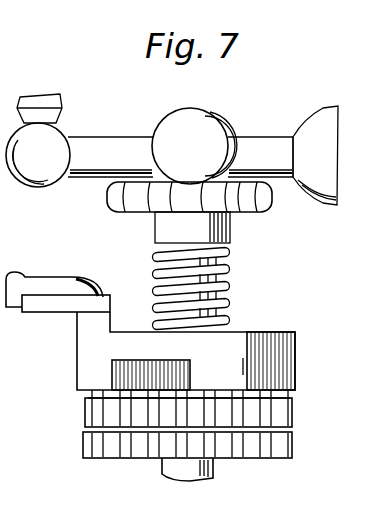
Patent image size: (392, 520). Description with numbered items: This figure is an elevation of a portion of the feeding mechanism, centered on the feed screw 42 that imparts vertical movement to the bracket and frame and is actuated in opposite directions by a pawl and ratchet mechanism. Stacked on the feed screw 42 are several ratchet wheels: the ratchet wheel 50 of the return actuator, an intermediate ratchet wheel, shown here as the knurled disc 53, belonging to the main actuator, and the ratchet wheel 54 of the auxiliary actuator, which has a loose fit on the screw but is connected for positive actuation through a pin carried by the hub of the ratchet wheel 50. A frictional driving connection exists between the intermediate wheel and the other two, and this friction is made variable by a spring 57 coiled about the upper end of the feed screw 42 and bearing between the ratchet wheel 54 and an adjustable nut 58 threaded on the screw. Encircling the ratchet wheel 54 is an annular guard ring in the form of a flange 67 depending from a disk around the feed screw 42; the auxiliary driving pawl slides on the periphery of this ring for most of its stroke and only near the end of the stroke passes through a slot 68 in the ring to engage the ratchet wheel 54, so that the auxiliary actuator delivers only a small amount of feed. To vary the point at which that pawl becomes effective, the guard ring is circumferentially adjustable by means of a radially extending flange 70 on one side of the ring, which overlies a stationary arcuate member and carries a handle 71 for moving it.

The feed screw 42 is at (170, 466).
The ratchet wheel of the return actuator 50 is at (88, 440).
The upper knurled disc 53 is at (88, 410).
The ratchet wheel of the auxiliary actuator 54 is at (132, 373).
The spring 57 is at (223, 283).
The adjustable nut 58 is at (107, 201).
The guard ring flange 67 is at (285, 360).
The slot in the guard ring 68 is at (190, 378).
The radially extending flange 70 is at (52, 303).
The handle 71 is at (50, 282).